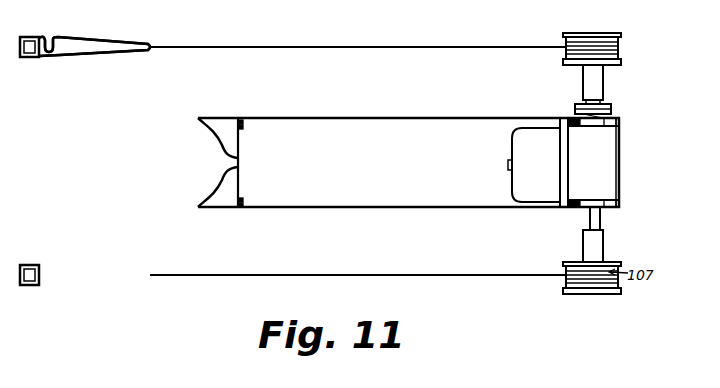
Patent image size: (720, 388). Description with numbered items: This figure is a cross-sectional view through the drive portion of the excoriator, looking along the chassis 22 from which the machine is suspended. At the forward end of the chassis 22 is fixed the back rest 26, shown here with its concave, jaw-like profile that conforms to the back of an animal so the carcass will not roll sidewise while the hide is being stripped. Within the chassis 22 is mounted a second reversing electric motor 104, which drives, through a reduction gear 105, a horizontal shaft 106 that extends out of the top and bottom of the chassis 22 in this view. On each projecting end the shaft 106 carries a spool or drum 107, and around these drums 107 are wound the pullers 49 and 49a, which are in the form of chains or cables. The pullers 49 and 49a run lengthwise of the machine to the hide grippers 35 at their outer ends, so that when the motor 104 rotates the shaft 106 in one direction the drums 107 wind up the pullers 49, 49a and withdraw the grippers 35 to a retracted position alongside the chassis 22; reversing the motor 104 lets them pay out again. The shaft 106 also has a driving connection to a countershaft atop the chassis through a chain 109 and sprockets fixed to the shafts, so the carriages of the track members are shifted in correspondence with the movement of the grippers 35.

The chassis 22 is at (358, 207).
The back rest 26 is at (219, 183).
The hide grippers 35 is at (93, 42).
The puller 49 is at (334, 46).
The puller 49a is at (382, 276).
The second reversing electric motor 104 is at (521, 148).
The reduction gear 105 is at (605, 151).
The horizontal shaft 106 is at (603, 220).
The spools or drums 107 is at (613, 47).
The chain 109 is at (606, 108).